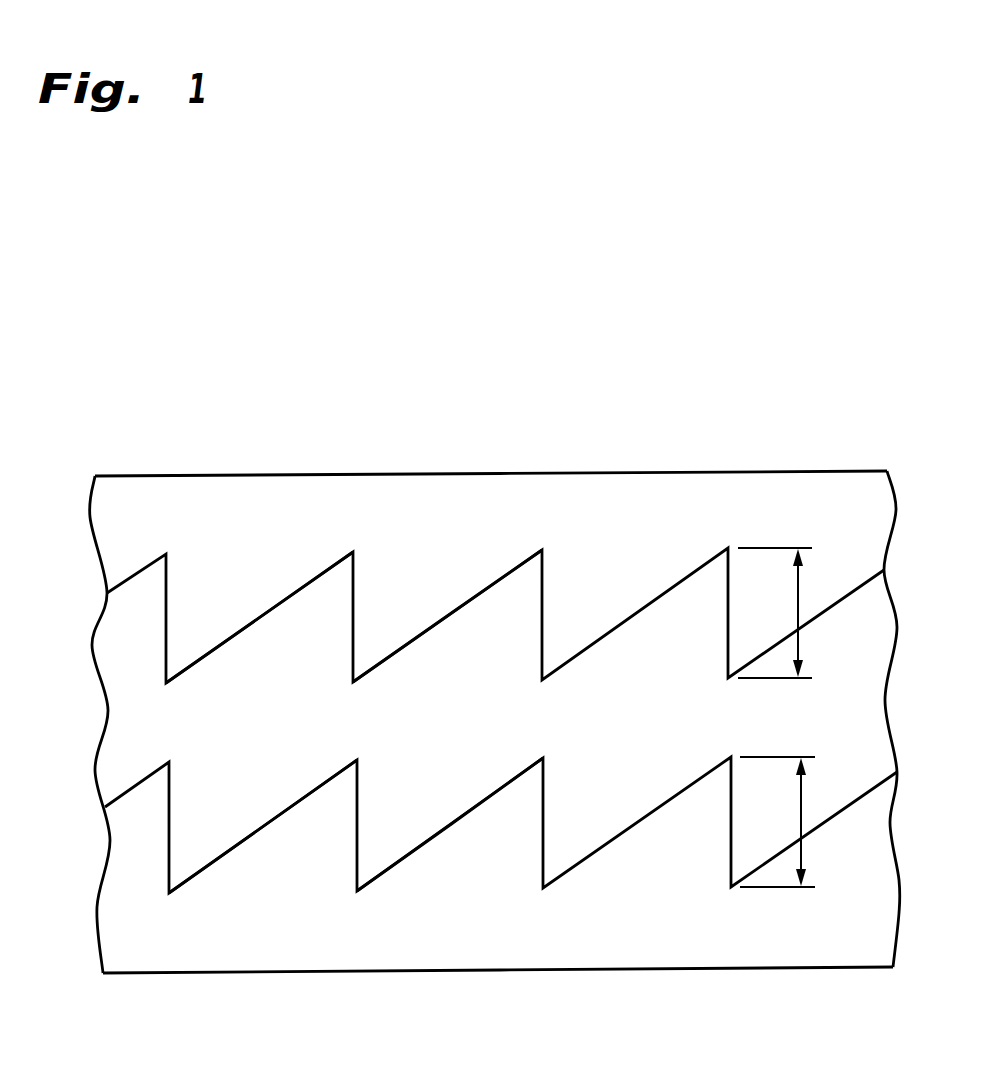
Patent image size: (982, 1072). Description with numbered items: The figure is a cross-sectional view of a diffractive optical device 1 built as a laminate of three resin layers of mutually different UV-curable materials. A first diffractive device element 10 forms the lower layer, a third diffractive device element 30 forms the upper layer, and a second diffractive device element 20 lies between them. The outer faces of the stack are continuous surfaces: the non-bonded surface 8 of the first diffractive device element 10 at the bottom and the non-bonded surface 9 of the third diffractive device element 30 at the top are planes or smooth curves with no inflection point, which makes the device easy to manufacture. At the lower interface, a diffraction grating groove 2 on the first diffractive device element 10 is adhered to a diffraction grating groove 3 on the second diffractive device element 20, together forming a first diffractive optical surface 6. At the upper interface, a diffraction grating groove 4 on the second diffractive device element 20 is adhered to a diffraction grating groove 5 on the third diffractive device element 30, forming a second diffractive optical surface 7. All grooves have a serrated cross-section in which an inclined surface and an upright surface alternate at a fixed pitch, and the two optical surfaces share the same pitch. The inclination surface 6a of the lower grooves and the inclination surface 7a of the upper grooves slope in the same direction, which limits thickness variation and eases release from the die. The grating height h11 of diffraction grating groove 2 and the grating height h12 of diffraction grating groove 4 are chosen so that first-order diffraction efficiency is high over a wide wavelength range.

The diffractive optical device 1 is at (136, 311).
The diffraction grating groove 2 is at (410, 865).
The diffraction grating groove 3 is at (480, 803).
The diffraction grating groove 4 is at (485, 592).
The diffraction grating groove 5 is at (402, 650).
The first diffractive optical surface 6 is at (299, 816).
The inclination surface 6a is at (245, 840).
The second diffractive optical surface 7 is at (294, 581).
The inclination surface 7a is at (243, 630).
The non-bonded surface 8 is at (386, 970).
The non-bonded surface 9 is at (335, 473).
The first diffractive device element 10 is at (617, 958).
The second diffractive device element 20 is at (655, 738).
The third diffractive device element 30 is at (593, 478).
The grating height h12 is at (807, 613).
The grating height h11 is at (808, 822).